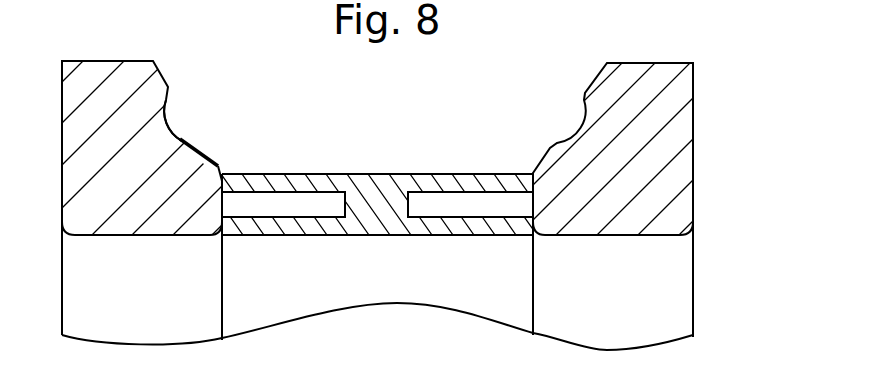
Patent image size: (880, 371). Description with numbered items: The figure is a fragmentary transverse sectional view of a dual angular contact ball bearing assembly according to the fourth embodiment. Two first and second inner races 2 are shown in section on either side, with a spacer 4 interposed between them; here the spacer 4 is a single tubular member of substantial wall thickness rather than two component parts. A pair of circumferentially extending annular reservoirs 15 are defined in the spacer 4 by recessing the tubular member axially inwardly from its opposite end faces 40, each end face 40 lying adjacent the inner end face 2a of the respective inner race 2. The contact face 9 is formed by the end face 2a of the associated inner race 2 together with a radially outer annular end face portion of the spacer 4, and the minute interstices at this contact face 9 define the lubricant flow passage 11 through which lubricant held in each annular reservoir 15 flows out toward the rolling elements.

The inner race 2 is at (82, 140).
The inner end face of inner race 2a is at (233, 207).
The spacer 4 is at (370, 193).
The contact face 9 is at (221, 160).
The lubricant flow passage 11 is at (222, 157).
The annular reservoir 15 is at (263, 203).
The end face of spacer 40 is at (222, 185).